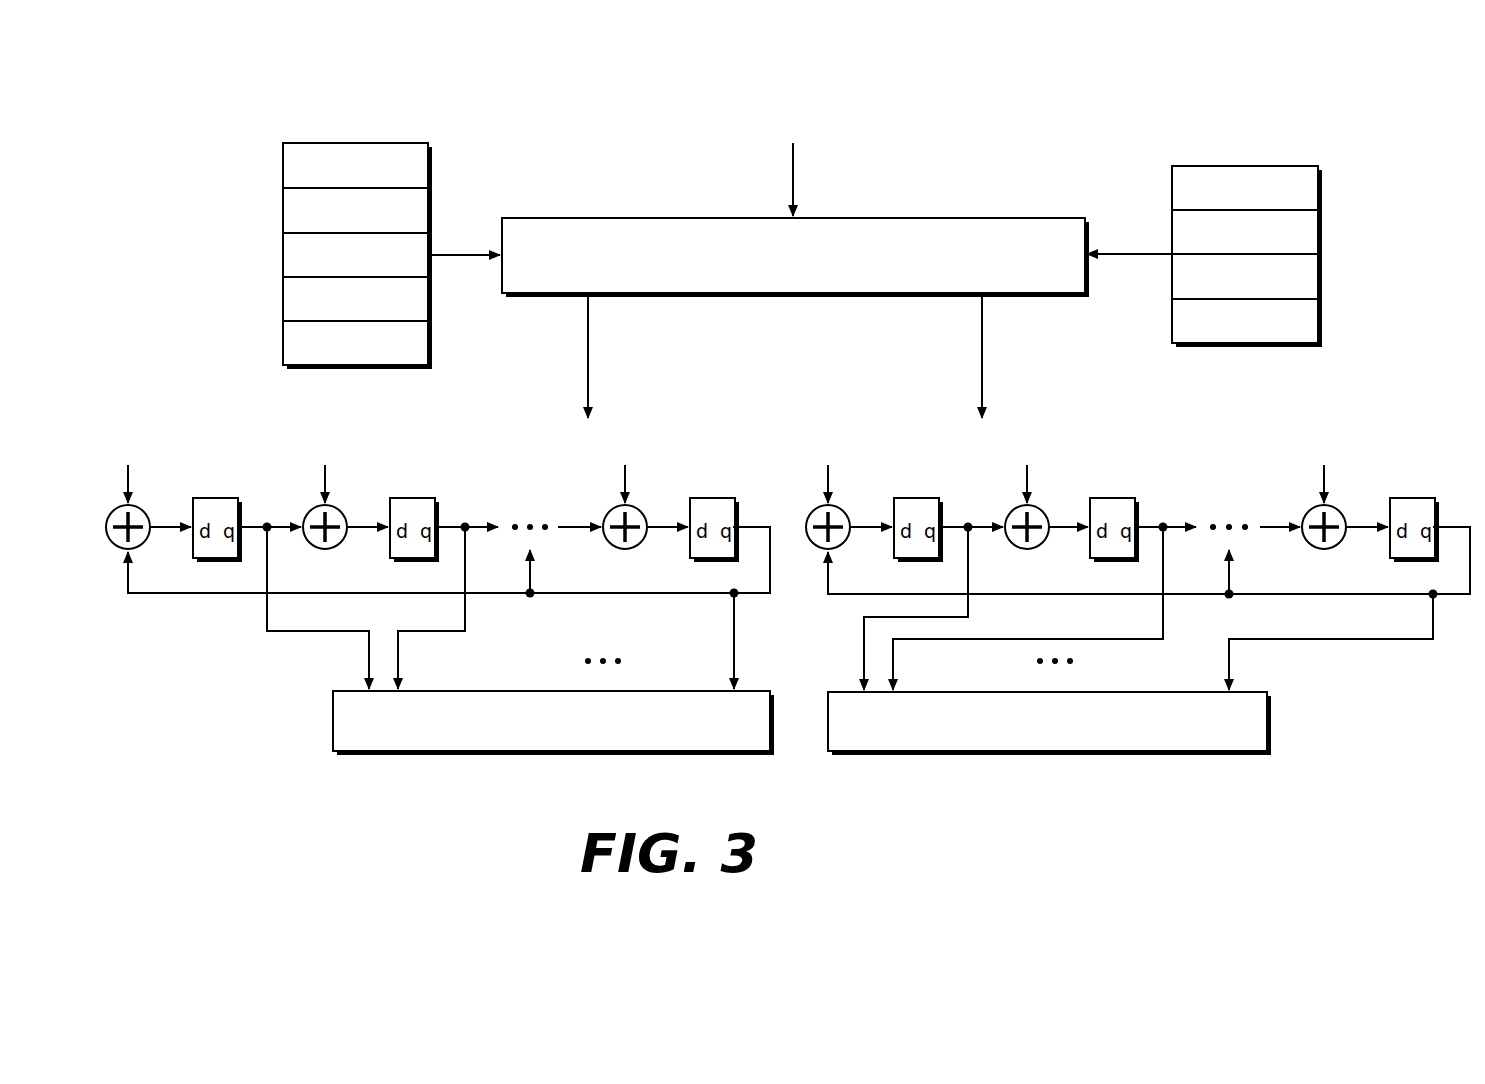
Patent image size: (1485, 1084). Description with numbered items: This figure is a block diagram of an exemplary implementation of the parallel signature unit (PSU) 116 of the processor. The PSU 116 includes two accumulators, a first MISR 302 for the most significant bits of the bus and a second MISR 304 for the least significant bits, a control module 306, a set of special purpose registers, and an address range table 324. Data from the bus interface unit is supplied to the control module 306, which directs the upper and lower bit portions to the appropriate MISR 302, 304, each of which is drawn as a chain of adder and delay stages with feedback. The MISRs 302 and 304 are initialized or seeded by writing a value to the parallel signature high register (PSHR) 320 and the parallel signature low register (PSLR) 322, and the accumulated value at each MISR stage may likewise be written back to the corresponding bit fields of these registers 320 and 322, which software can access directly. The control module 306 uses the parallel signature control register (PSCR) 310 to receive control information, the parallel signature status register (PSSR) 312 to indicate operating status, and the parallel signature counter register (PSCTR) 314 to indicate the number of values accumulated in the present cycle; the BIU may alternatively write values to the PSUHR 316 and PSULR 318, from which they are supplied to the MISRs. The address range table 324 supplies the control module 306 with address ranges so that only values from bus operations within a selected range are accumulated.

The parallel signature unit 116 is at (555, 122).
The parallel signature control register 310 is at (282, 165).
The parallel signature status register 312 is at (282, 209).
The parallel signature counter register 314 is at (282, 253).
The PSUHR 316 is at (282, 297).
The PSULR 318 is at (282, 341).
The control module 306 is at (913, 277).
The address range table 324 is at (1274, 166).
The MISR 302 is at (492, 458).
The MISR 304 is at (1196, 458).
The parallel signature high register 320 is at (665, 740).
The parallel signature low register 322 is at (1162, 740).